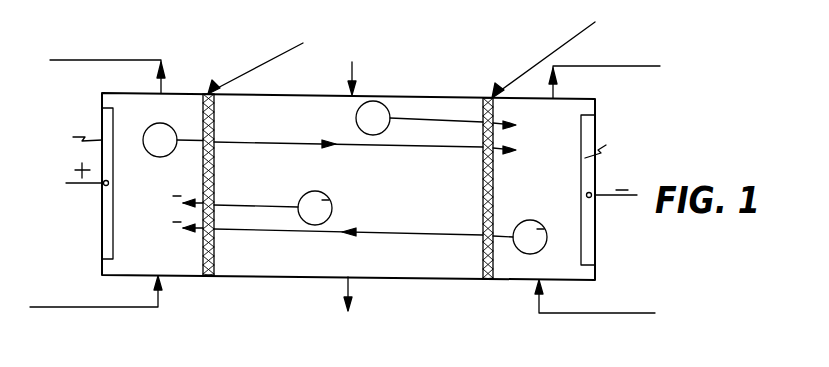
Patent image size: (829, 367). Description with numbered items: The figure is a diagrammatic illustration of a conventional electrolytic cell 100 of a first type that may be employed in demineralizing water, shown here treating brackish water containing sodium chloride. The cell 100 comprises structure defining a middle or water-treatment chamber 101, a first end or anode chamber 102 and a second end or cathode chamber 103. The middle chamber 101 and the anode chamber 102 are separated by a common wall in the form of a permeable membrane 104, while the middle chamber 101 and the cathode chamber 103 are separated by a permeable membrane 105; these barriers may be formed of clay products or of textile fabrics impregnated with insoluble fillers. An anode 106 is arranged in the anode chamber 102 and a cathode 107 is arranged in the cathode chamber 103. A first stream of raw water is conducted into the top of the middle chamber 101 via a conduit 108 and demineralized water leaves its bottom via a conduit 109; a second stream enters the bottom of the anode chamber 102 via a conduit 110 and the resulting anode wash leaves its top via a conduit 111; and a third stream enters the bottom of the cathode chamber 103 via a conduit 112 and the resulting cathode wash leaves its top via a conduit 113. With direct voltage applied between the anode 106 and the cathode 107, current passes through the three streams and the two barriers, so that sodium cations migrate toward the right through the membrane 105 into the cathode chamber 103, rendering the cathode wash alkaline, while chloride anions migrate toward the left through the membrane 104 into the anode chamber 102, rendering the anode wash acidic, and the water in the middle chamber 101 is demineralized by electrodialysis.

The electrolytic cell 100 is at (331, 88).
The middle or water-treatment chamber 101 is at (403, 189).
The anode chamber 102 is at (151, 186).
The cathode chamber 103 is at (549, 188).
The permeable membrane 104 is at (216, 171).
The permeable membrane 105 is at (482, 212).
The anode 106 is at (102, 227).
The cathode 107 is at (583, 228).
The conduit 108 is at (355, 70).
The conduit 109 is at (356, 292).
The conduit 110 is at (151, 312).
The conduit 111 is at (143, 60).
The conduit 112 is at (548, 314).
The conduit 113 is at (650, 66).